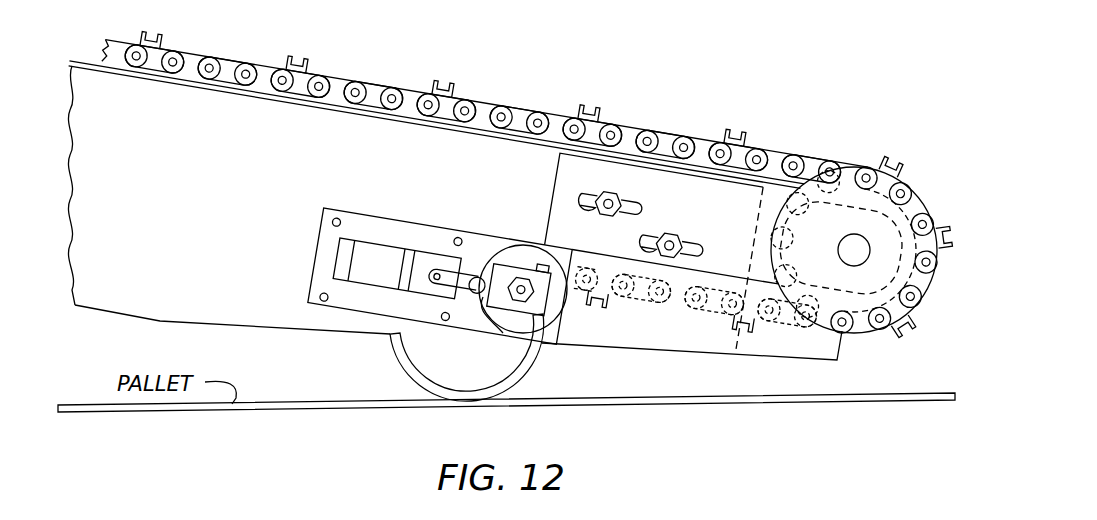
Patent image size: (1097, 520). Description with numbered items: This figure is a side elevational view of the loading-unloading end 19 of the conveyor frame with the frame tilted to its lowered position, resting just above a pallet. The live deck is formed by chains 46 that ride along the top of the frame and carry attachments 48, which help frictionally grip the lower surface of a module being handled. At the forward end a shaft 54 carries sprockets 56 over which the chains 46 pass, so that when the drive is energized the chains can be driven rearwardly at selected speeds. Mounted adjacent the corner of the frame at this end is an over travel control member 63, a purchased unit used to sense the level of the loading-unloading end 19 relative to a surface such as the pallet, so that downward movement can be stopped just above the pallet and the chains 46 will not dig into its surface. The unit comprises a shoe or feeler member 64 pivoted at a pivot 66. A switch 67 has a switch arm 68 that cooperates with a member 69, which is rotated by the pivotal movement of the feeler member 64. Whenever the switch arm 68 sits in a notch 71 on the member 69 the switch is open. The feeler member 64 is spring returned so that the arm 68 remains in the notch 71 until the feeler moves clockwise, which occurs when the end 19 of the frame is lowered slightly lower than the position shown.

The loading-unloading end 19 is at (933, 208).
The chains 46 is at (519, 108).
The attachments 48 is at (446, 83).
The shaft 54 is at (855, 250).
The sprockets 56 is at (845, 170).
The over travel control member 63 is at (373, 218).
The feeler member 64 is at (520, 367).
The pivot 66 is at (519, 282).
The switch 67 is at (390, 258).
The switch arm 68 is at (477, 277).
The member 69 is at (550, 320).
The notch 71 is at (483, 305).